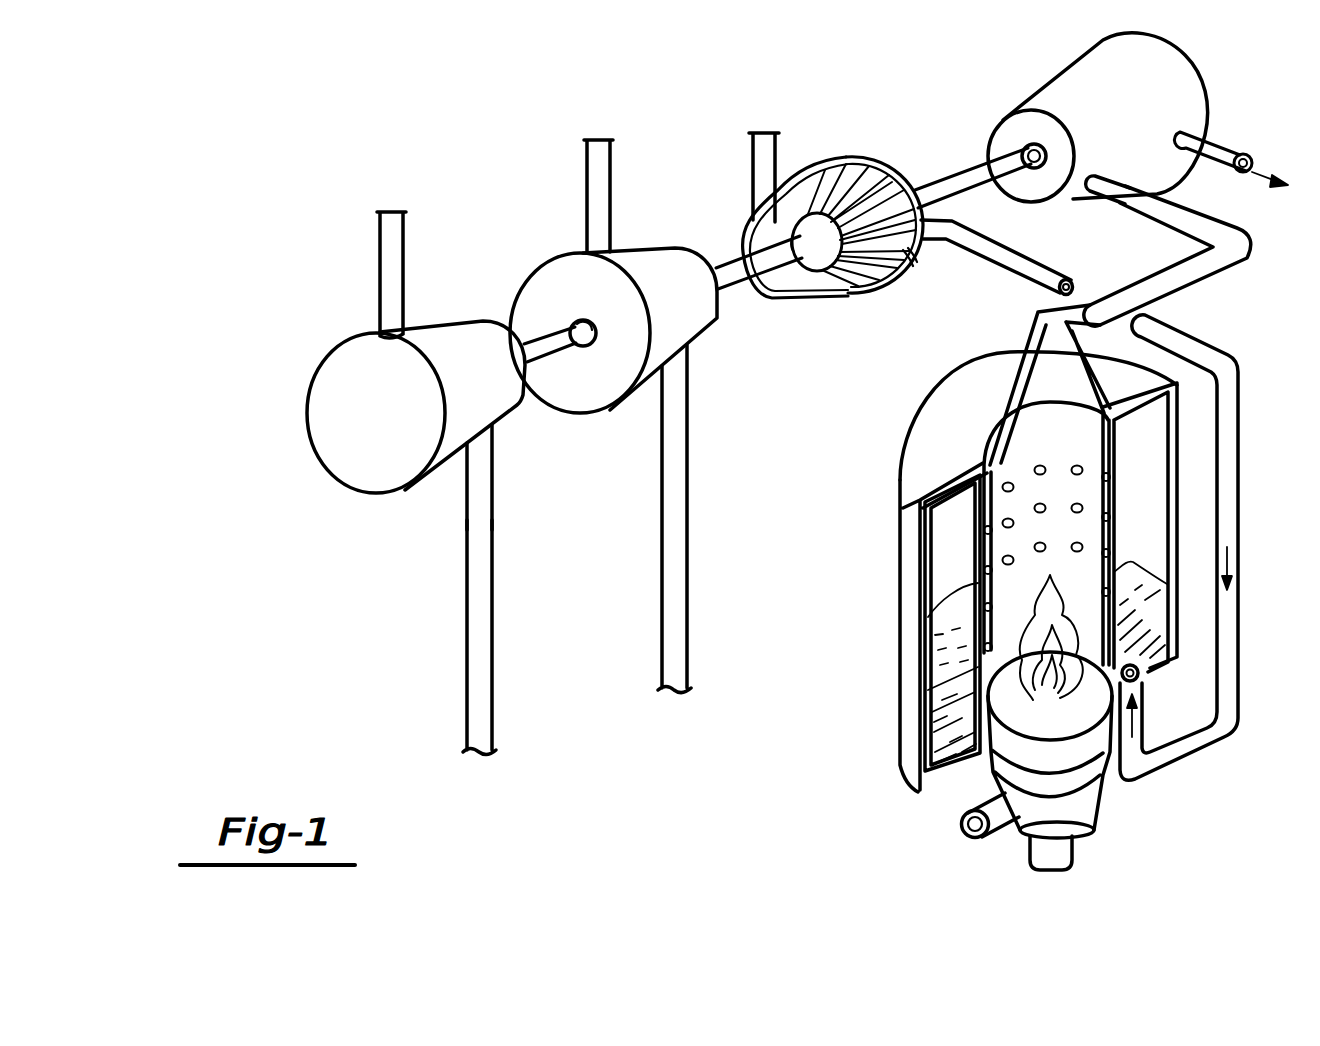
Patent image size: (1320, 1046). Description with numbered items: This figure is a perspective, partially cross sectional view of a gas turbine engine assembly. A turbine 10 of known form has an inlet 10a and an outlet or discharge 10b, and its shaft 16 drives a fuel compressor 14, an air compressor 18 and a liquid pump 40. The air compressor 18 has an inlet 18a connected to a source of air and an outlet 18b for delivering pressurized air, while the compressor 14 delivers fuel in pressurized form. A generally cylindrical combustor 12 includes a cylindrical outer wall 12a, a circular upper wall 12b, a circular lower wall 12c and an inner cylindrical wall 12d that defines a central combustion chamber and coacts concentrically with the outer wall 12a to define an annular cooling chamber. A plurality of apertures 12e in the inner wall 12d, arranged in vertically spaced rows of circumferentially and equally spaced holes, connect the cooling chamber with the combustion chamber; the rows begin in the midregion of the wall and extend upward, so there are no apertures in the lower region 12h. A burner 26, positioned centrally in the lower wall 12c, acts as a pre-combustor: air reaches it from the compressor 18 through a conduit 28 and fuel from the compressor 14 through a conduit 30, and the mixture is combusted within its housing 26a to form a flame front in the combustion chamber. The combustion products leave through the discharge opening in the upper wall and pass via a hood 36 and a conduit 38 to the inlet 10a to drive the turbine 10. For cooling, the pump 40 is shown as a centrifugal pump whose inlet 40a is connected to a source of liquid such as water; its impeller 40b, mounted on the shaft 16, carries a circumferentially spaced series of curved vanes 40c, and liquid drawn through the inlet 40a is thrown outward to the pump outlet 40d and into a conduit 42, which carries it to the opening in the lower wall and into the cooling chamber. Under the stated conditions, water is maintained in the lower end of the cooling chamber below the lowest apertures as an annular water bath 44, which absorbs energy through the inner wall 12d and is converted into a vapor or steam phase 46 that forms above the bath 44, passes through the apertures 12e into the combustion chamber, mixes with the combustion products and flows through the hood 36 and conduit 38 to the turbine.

The turbine 10 is at (1141, 113).
The inlet 10a is at (1122, 186).
The outlet or discharge 10b is at (1215, 143).
The combustor 12 is at (1000, 589).
The cylindrical outer wall 12a is at (908, 578).
The circular upper wall 12b is at (962, 457).
The circular lower wall 12c is at (950, 782).
The inner cylindrical wall 12d is at (1110, 498).
The apertures 12e is at (1044, 468).
The lower region of inner wall 12h is at (1138, 679).
The compressor 14 is at (639, 258).
The shaft 16 is at (987, 170).
The compressor 18 is at (450, 320).
The inlet 18a is at (385, 330).
The outlet 18b is at (487, 465).
The burner 26 is at (1108, 722).
The housing 26a is at (1068, 778).
The conduit 28 is at (493, 683).
The conduit 30 is at (688, 648).
The hood 36 is at (1005, 390).
The conduit 38 is at (1225, 229).
The pump 40 is at (823, 213).
The inlet 40a is at (758, 213).
The impeller 40b is at (835, 183).
The curved vanes 40c is at (889, 160).
The pump outlet 40d is at (913, 258).
The conduit 42 is at (1046, 272).
The annular water bath 44 is at (942, 710).
The vapor or steam phase 46 is at (942, 632).